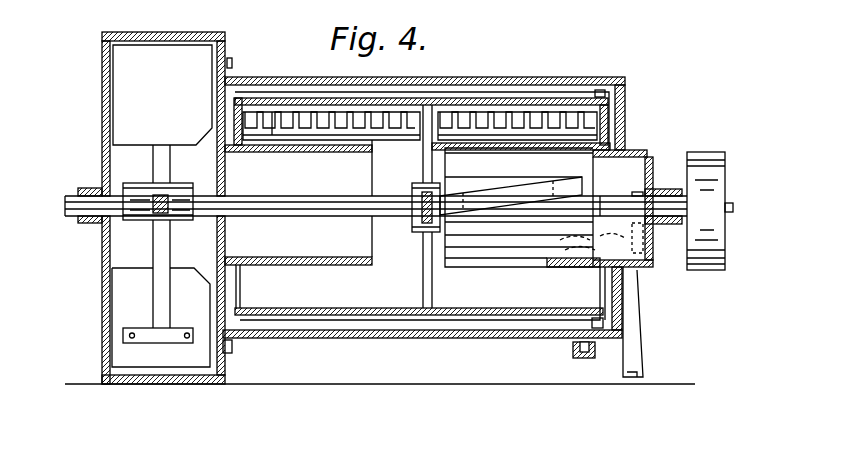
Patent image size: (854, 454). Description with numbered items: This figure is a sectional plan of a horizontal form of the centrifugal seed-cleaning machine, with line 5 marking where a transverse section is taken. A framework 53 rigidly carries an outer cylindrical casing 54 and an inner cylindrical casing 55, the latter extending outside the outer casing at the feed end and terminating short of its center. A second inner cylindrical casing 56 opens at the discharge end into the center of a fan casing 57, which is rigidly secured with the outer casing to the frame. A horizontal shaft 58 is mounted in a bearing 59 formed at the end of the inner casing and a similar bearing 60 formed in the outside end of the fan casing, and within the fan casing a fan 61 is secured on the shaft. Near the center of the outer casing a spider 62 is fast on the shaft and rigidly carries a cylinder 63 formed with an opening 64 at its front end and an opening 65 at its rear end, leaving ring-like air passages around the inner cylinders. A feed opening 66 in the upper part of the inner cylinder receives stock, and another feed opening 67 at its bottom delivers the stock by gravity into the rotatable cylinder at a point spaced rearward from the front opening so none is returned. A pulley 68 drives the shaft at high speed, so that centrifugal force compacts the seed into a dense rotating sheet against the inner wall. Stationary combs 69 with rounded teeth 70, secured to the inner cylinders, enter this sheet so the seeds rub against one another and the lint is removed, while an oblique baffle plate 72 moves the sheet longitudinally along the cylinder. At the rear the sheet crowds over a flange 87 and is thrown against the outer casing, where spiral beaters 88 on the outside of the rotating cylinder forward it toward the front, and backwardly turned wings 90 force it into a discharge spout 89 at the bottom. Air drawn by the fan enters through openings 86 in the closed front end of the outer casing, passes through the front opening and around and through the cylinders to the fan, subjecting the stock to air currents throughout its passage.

The section line 5 is at (499, 77).
The framework 53 is at (620, 360).
The outer cylindrical casing 54 is at (480, 338).
The inner cylindrical casing 55 is at (497, 264).
The second inner cylindrical casing 56 is at (327, 265).
The fan casing 57 is at (100, 290).
The horizontal shaft 58 is at (605, 206).
The bearing 59 is at (665, 190).
The bearing 60 is at (92, 192).
The fan 61 is at (125, 88).
The spider 62 is at (423, 162).
The cylinder 63 is at (381, 314).
The opening 64 is at (605, 130).
The opening 65 is at (236, 130).
The feed opening 66 is at (635, 149).
The feed opening 67 is at (578, 267).
The pulley 68 is at (720, 151).
The combs 69 is at (420, 89).
The teeth 70 is at (335, 118).
The baffle plate 72 is at (485, 202).
The openings 86 is at (622, 117).
The flange 87 is at (243, 300).
The spiral beaters 88 is at (281, 93).
The discharge spout 89 is at (578, 360).
The backwardly turned wings 90 is at (598, 90).